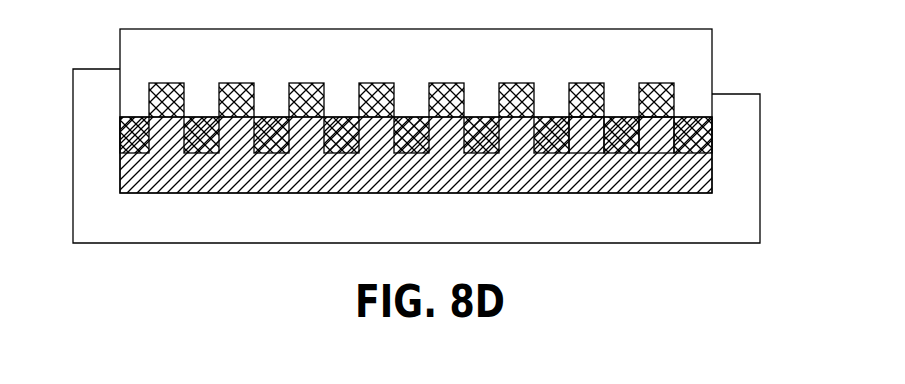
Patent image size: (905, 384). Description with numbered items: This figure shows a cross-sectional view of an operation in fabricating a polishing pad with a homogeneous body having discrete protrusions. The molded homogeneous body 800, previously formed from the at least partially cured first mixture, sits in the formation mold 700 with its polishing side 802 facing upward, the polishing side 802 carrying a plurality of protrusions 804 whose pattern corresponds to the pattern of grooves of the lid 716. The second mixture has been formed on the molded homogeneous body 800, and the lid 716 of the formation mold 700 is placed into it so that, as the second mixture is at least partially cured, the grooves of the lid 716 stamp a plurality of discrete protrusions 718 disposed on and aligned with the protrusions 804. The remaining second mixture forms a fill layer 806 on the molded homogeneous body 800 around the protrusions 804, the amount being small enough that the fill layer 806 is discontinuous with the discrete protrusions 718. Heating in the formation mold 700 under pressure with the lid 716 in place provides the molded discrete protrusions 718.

The formation mold 700 is at (747, 132).
The lid 716 is at (690, 51).
The discrete protrusions 718 is at (651, 83).
The molded homogeneous body 800 is at (145, 178).
The polishing side 802 is at (657, 123).
The protrusions 804 is at (583, 138).
The fill layer 806 is at (268, 143).